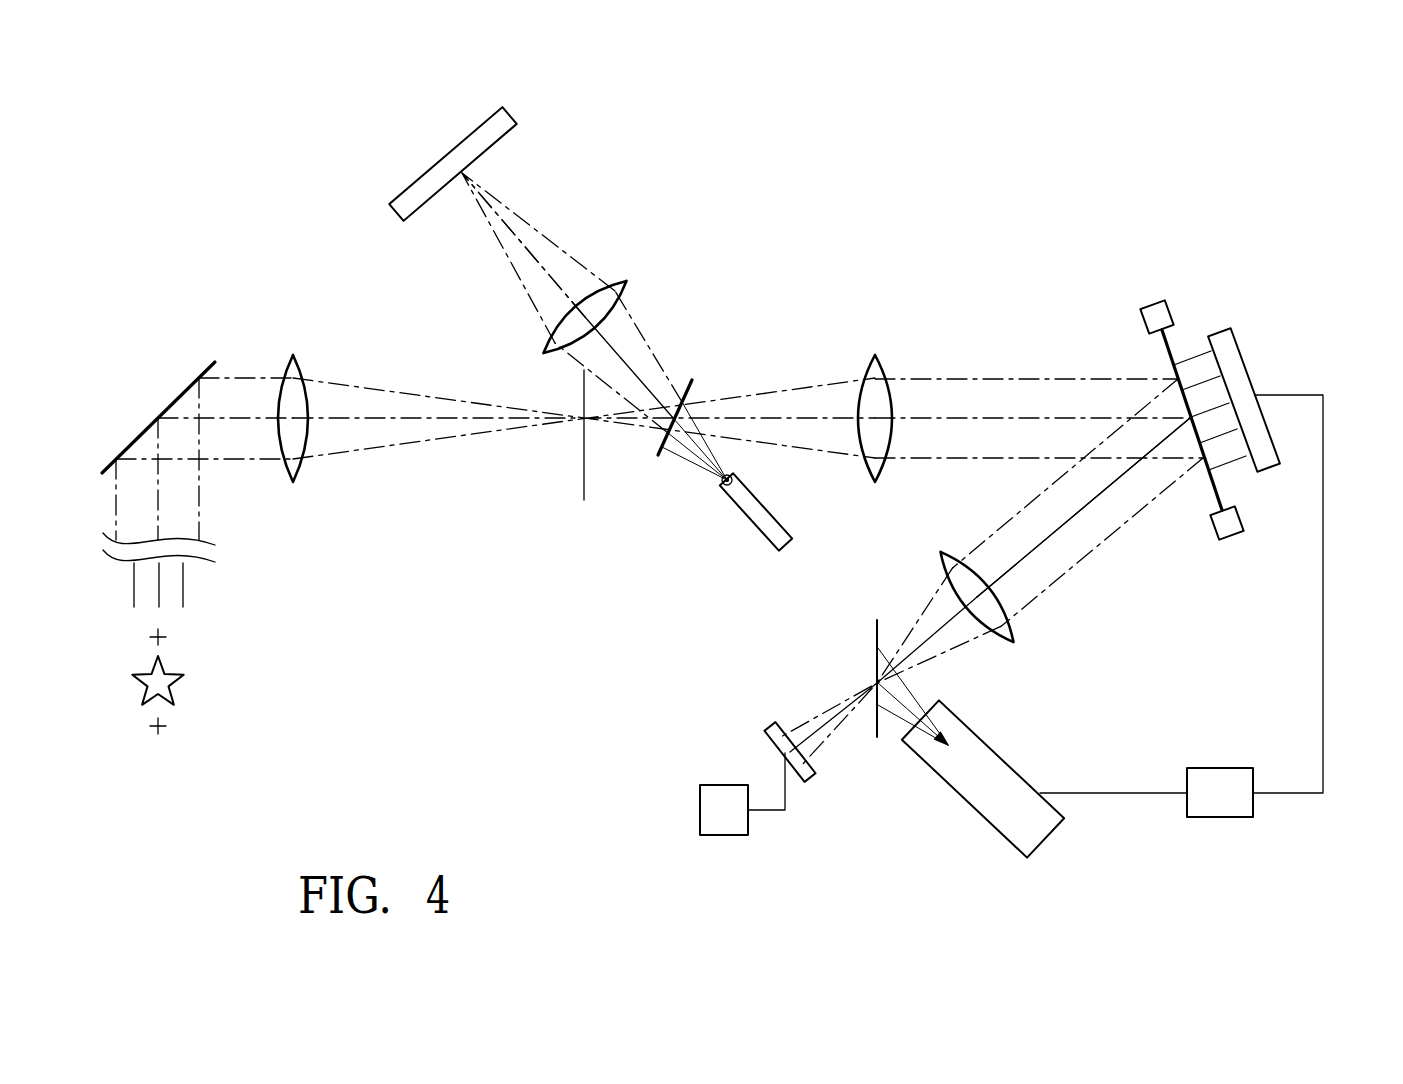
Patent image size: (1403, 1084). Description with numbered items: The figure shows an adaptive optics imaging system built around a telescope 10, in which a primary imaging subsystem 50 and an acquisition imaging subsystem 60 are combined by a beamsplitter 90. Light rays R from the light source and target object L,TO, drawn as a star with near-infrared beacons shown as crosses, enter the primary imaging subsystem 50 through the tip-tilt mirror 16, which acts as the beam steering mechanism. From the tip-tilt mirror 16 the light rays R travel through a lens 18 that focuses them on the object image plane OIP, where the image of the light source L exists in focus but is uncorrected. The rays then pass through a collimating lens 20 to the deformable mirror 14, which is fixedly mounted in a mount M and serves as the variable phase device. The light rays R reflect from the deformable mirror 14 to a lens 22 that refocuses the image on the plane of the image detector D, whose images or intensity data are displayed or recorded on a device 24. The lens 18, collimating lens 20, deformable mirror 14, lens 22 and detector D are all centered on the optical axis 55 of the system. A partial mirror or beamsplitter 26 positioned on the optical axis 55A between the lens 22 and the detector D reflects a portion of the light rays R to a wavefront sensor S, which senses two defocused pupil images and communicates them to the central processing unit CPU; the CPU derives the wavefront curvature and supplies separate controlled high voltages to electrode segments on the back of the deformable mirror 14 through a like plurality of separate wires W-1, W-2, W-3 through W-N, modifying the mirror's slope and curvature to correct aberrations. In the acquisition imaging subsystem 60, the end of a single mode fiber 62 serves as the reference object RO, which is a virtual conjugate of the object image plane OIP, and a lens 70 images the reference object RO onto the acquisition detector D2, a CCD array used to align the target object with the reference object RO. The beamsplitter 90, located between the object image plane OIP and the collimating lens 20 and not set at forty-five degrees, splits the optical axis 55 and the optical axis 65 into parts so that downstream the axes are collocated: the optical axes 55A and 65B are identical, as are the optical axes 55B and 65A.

The telescope 10 is at (475, 542).
The tip-tilt mirror 16 is at (213, 368).
The lens 18 is at (300, 370).
The optical axis 55 is at (422, 418).
The light source L is at (263, 460).
The light rays R is at (323, 453).
The object image plane OIP is at (583, 465).
The light source and target object L,TO is at (182, 690).
The beamsplitter 90 is at (690, 390).
The optical axis 65 is at (693, 443).
The single mode fiber 62 is at (755, 527).
The reference object RO is at (734, 478).
The lens 70 is at (627, 283).
The optical axis part 55B is at (510, 233).
The optical axis part 65A is at (510, 247).
The acquisition detector D2 is at (512, 115).
The acquisition imaging subsystem 60 is at (603, 235).
The collimating lens 20 is at (867, 360).
The primary imaging subsystem 50 is at (1048, 280).
The deformable mirror 14 is at (1105, 352).
The mount M is at (1160, 305).
The wire W-1 is at (1190, 363).
The wire W-2 is at (1212, 387).
The wire W-3 is at (1217, 413).
The wire W-N is at (1232, 460).
The optical axis part 55A is at (1080, 513).
The optical axis part 65B is at (1083, 512).
The lens 22 is at (1013, 633).
The beamsplitter 26 is at (873, 633).
The image detector D is at (770, 728).
The display or recording device 24 is at (718, 835).
The wavefront sensor S is at (1005, 760).
The central processing unit CPU is at (1181, 606).